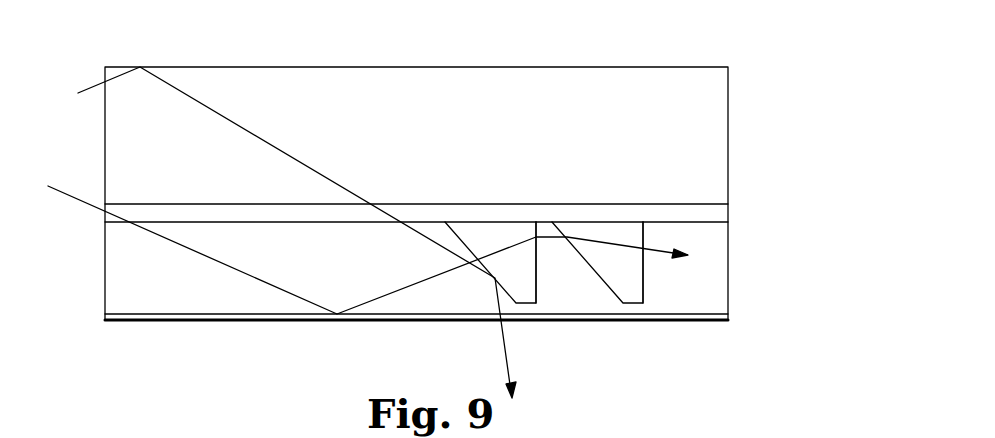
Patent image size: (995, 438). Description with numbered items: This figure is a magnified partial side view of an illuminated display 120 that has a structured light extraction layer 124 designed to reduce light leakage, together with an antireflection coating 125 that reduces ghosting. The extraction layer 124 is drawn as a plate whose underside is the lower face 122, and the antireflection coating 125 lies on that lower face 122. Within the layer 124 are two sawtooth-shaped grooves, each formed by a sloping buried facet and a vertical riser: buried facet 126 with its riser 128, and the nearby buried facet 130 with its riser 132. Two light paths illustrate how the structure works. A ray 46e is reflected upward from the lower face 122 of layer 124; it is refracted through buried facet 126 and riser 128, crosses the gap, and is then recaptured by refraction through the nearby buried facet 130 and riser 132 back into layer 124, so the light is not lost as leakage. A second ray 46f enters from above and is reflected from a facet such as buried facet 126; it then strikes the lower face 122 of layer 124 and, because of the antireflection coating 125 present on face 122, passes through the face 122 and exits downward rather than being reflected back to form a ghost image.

The illuminated display 120 is at (695, 40).
The lower face 122 is at (195, 314).
The structured light extraction layer 124 is at (716, 281).
The antireflection coating 125 is at (675, 322).
The buried facet 126 is at (463, 242).
The riser 128 is at (534, 292).
The buried facet 130 is at (618, 289).
The riser 132 is at (641, 236).
The light ray 46f is at (97, 83).
The light ray 46e is at (73, 198).